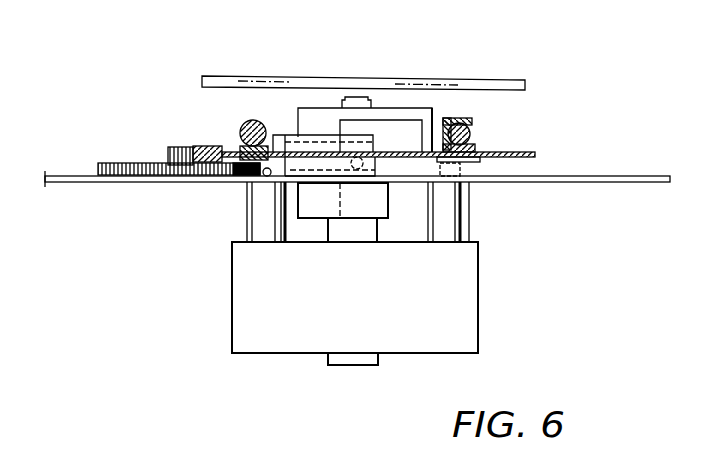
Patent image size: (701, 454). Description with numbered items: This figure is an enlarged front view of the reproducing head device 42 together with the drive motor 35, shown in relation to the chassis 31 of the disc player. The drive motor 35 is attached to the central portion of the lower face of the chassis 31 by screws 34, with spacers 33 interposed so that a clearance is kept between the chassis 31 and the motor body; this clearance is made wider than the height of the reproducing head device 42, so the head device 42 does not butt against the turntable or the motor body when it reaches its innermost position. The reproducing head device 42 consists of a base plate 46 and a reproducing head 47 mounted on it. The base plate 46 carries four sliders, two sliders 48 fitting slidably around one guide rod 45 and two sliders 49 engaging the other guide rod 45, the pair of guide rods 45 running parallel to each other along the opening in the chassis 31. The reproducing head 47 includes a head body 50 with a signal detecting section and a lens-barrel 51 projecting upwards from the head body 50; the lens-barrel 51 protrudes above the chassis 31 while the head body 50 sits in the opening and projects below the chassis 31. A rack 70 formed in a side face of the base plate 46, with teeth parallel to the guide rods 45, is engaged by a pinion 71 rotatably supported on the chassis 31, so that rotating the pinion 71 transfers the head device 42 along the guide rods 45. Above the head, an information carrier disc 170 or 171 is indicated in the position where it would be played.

The chassis 31 is at (590, 185).
The spacers 33 is at (245, 223).
The screws 34 is at (265, 175).
The drive motor 35 is at (478, 288).
The reproducing head device 42 is at (437, 113).
The guide rods 45 is at (248, 123).
The base plate 46 is at (530, 153).
The reproducing head 47 is at (398, 108).
The sliders 48 is at (242, 140).
The sliders 49 is at (471, 148).
The head body 50 is at (390, 198).
The lens-barrel 51 is at (345, 101).
The rack 70 is at (194, 147).
The pinion 71 is at (167, 151).
The information carrier disc 170 is at (233, 76).
The information carrier disc 171 is at (363, 83).